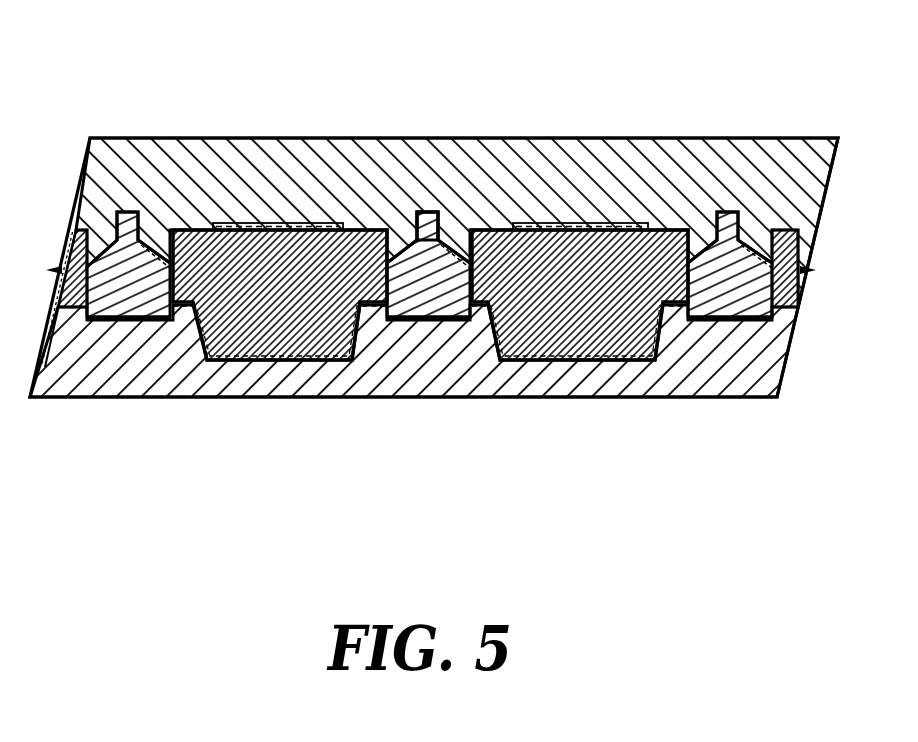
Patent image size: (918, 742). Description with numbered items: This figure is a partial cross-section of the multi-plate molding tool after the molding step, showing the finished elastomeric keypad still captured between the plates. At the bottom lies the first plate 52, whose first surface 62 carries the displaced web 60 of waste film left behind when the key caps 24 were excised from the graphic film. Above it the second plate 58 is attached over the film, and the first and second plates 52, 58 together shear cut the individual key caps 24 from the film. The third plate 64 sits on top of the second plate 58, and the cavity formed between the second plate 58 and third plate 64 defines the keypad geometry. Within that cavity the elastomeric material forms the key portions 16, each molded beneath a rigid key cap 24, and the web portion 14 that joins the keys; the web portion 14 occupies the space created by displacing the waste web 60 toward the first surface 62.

The web portion 14 is at (434, 212).
The key portion 16 is at (600, 320).
The key cap 24 is at (258, 363).
The first plate 52 is at (557, 383).
The second plate 58 is at (420, 287).
The web of waste film 60 is at (102, 320).
The first surface 62 is at (732, 313).
The third plate 64 is at (550, 175).